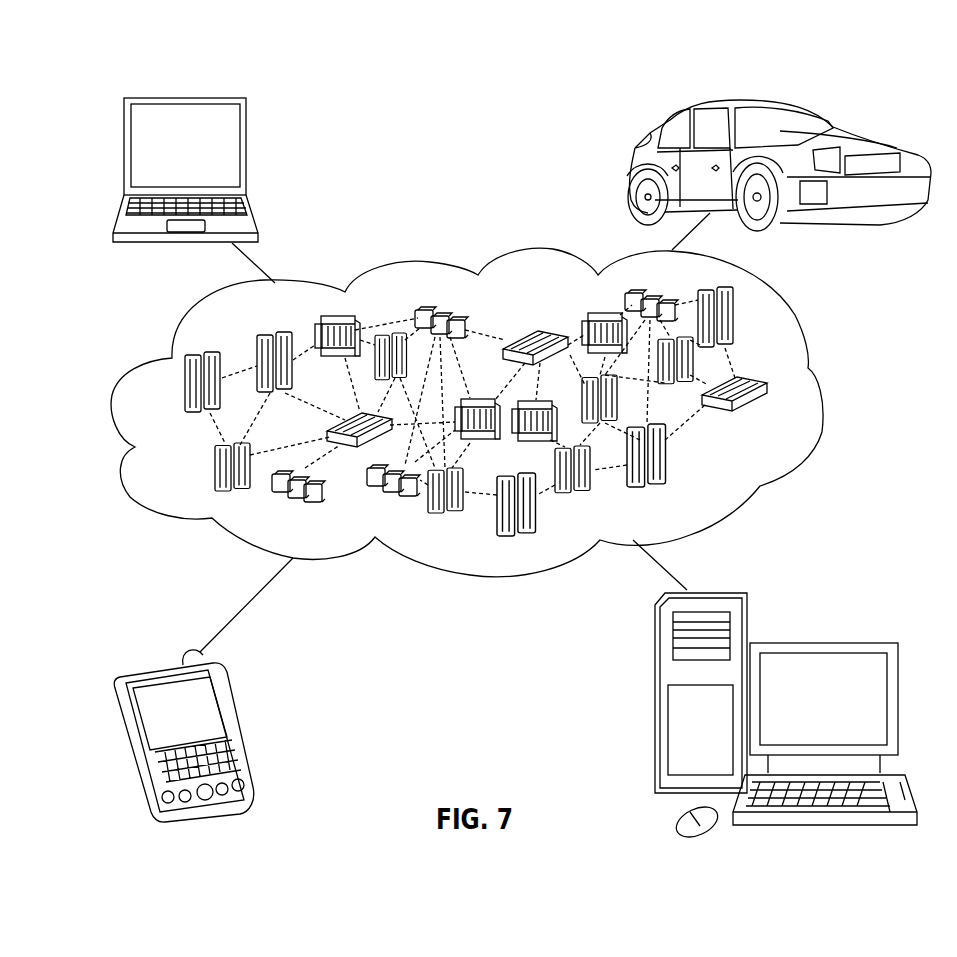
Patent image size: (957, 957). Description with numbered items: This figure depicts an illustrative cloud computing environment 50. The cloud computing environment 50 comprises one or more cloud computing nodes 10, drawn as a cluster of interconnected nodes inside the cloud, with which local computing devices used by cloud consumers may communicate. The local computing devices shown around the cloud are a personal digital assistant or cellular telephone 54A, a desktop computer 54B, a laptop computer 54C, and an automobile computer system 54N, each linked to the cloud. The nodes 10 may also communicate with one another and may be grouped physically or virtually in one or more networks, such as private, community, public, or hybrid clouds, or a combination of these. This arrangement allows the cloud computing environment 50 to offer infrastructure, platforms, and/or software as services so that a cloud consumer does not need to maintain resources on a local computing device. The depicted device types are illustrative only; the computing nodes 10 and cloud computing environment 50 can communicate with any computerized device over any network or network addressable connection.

The cloud computing environment 50 is at (822, 389).
The cloud computing node 10 is at (768, 418).
The personal digital assistant (PDA) or cellular telephone 54A is at (240, 730).
The desktop computer 54B is at (820, 643).
The laptop computer 54C is at (247, 152).
The automobile computer system 54N is at (628, 167).